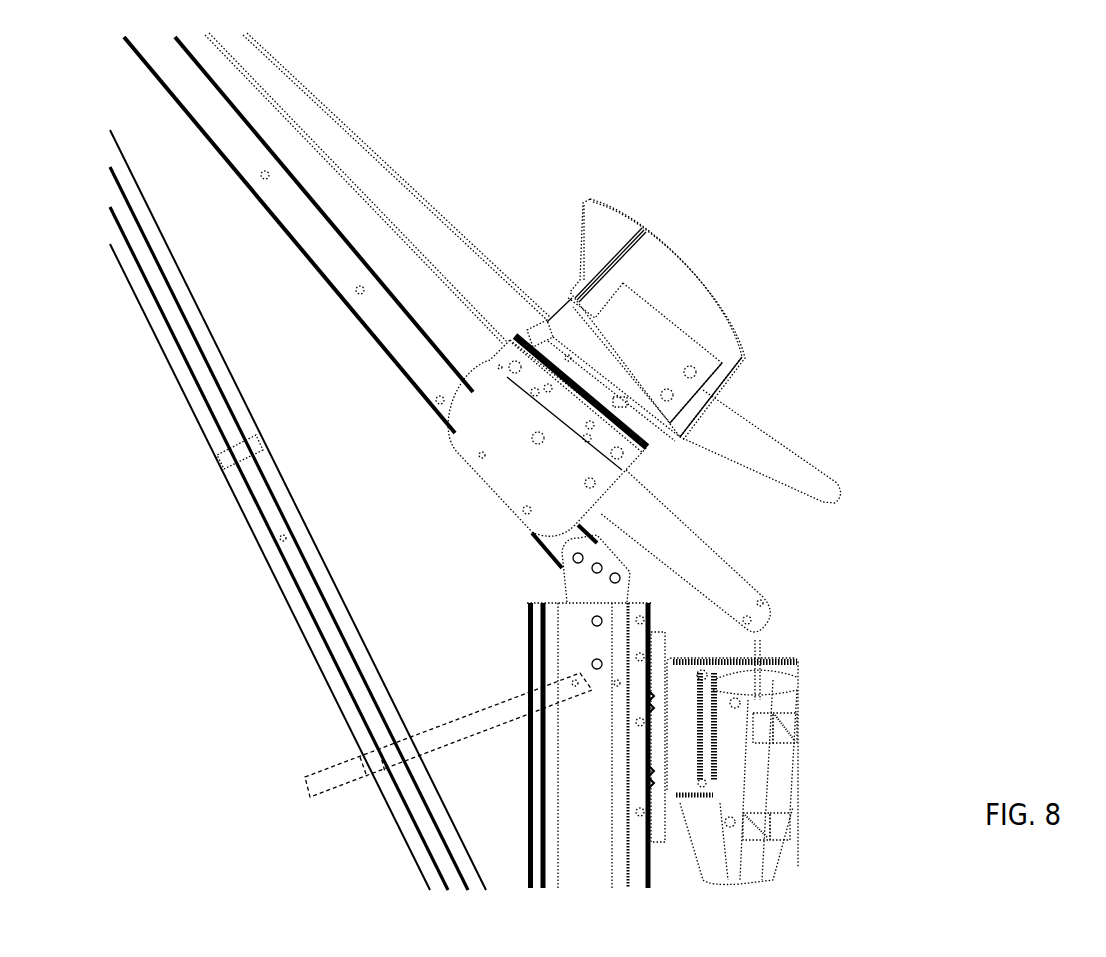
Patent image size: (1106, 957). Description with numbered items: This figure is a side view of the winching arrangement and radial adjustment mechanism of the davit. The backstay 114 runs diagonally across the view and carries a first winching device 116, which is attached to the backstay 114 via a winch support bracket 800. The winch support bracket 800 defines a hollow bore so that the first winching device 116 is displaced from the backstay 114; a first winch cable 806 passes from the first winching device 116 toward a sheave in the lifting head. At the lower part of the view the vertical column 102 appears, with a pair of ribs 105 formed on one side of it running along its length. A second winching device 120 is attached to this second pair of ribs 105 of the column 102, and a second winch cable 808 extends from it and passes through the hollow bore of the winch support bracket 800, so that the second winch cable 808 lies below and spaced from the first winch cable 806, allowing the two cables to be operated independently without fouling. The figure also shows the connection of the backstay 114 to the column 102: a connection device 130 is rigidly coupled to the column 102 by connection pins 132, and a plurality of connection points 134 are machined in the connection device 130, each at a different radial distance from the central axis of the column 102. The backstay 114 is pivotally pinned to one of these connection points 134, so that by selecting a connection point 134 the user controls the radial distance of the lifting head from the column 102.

The column 102 is at (592, 822).
The second pair of ribs 105 is at (635, 643).
The backstay 114 is at (247, 145).
The first winching device 116 is at (700, 287).
The second winching device 120 is at (795, 722).
The connection device 130 is at (654, 576).
The connection pins 132 is at (590, 623).
The connection points 134 is at (583, 556).
The winch support bracket 800 is at (510, 450).
The first winch cable 806 is at (420, 188).
The second winch cable 808 is at (338, 170).